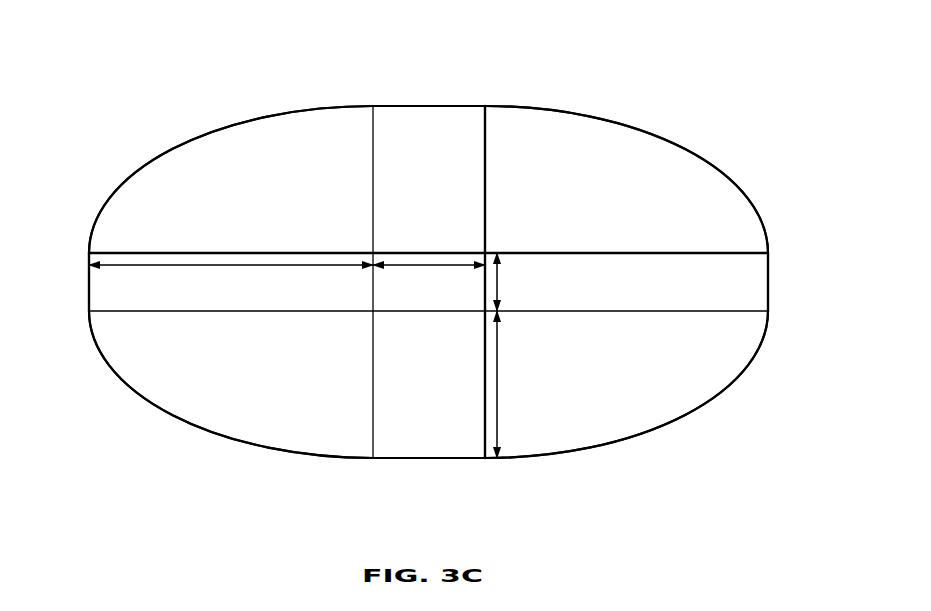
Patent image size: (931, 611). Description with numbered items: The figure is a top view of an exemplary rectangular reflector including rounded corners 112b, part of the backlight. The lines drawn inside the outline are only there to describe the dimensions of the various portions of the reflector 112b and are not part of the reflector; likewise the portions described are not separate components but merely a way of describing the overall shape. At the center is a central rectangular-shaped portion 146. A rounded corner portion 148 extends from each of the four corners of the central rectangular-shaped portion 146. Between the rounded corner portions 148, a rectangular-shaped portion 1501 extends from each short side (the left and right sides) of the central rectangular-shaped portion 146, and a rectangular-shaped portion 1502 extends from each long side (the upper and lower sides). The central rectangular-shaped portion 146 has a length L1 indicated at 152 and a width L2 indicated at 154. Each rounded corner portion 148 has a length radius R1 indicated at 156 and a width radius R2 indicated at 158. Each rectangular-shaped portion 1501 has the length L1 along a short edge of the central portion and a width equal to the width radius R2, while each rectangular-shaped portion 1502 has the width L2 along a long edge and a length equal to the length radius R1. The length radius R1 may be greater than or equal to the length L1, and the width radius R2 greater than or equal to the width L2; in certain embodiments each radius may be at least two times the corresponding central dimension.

The rectangular reflector including rounded corners 112b is at (614, 60).
The rounded corner portion 148 is at (247, 140).
The rectangular-shaped portion 1501 is at (98, 293).
The rectangular-shaped portion 1502 is at (437, 120).
The central rectangular-shaped portion 146 is at (420, 302).
The width radius R2 158 is at (218, 264).
The width L2 154 is at (430, 265).
The length L1 152 is at (498, 280).
The length radius R1 156 is at (498, 363).